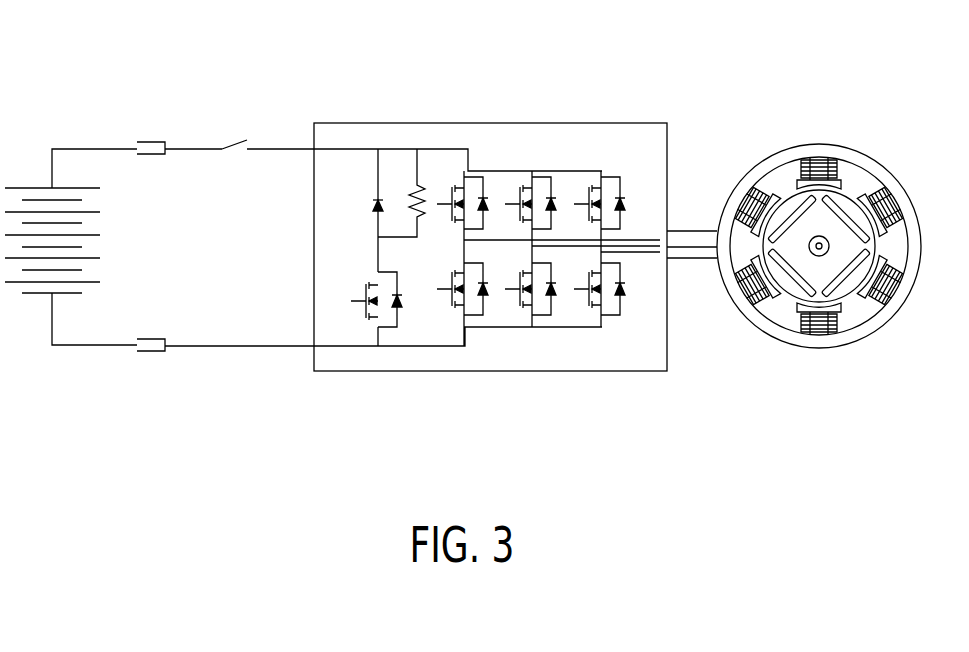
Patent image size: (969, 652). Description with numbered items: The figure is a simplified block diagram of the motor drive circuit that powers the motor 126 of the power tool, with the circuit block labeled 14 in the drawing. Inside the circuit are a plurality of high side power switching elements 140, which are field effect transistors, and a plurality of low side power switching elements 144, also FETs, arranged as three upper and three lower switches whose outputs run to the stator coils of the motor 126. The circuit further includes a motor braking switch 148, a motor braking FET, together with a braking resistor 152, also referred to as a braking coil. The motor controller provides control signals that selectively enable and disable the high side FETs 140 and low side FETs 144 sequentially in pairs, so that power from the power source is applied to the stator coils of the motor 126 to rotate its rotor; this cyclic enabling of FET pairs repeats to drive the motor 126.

The inverter / power electronics assembly 14 is at (649, 74).
The motor 126 is at (819, 348).
The high side power switching elements 140 is at (609, 172).
The low side power switching elements 144 is at (611, 320).
The motor braking switch 148 is at (396, 278).
The braking resistor 152 is at (418, 182).